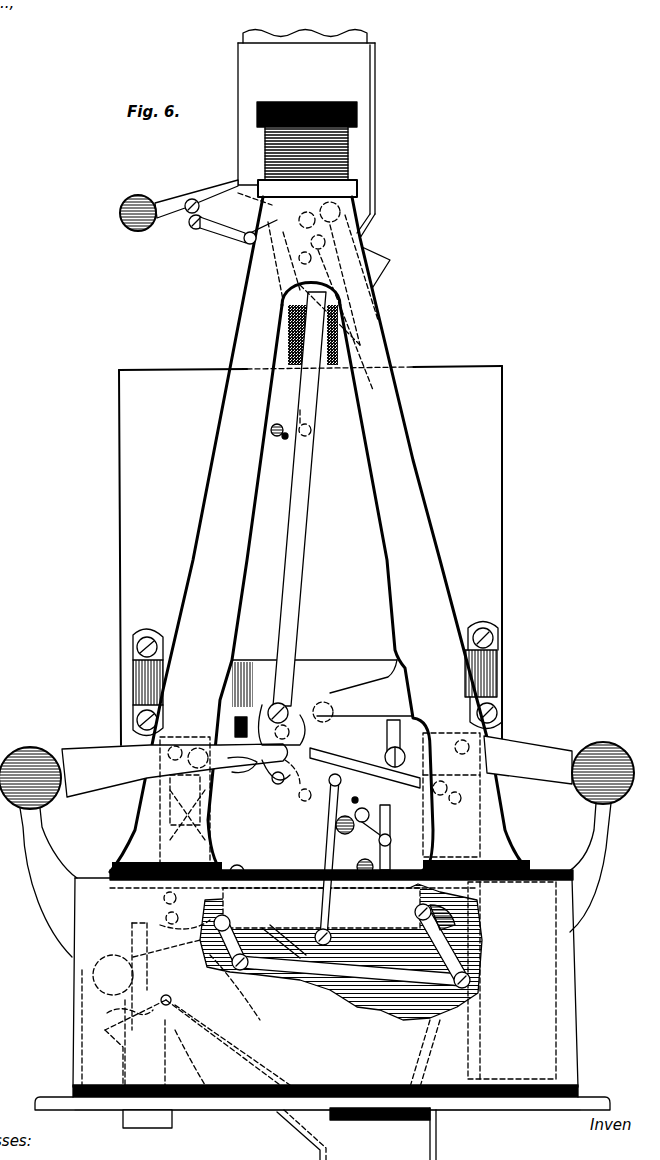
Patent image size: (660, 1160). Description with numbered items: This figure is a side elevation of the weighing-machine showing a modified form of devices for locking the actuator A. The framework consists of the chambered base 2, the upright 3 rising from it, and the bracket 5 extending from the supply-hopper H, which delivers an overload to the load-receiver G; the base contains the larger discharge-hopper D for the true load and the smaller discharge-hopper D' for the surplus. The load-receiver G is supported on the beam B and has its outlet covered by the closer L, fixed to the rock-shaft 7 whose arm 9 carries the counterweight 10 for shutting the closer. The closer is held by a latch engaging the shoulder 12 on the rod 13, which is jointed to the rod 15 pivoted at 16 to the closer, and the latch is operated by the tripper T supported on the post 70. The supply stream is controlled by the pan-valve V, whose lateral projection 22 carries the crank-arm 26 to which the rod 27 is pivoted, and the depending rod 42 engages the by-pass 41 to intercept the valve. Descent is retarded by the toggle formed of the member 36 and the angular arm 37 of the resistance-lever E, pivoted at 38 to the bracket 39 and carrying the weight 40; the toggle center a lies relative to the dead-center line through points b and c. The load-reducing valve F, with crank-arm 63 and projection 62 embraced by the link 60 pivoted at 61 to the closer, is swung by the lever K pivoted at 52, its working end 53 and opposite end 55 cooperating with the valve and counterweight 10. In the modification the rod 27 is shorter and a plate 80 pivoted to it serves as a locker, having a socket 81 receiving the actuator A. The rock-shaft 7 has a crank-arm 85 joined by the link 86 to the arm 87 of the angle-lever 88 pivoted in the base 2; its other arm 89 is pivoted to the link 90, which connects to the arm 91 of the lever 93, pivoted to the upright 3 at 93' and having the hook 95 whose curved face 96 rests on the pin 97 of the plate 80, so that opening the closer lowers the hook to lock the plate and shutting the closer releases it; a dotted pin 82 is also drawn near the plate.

The supply-hopper H is at (306, 134).
The bracket 5 is at (334, 104).
The crank-arm or offset 26 is at (307, 162).
The upright or column 3 is at (410, 493).
The pan-valve V is at (378, 260).
The rod 27 is at (293, 575).
The by-pass 41 is at (280, 424).
The rod 42 is at (367, 347).
The load-receiver G is at (310, 555).
The counterweighted resistance device or lever E is at (194, 199).
The weight 40 is at (132, 226).
The bracket 39 is at (212, 196).
The pivot 38 is at (190, 200).
The angular arm 37 is at (190, 226).
The extreme point of toggle b is at (188, 249).
The toggle member 36 is at (277, 220).
The point or center of toggle a is at (244, 249).
The lateral projection 22 is at (308, 291).
The extreme point of toggle c is at (314, 233).
The actuator A is at (144, 850).
The supporting-beam B is at (239, 779).
The arm 91 is at (492, 770).
The plate 80 is at (290, 722).
The pin 82 is at (330, 705).
The hook 95 is at (320, 768).
The shoulder 12 is at (350, 775).
The rod 13 is at (395, 780).
The socket 81 is at (274, 782).
The curved face 96 is at (302, 788).
The pin 97 is at (276, 785).
The closer L is at (366, 812).
The tripper T is at (393, 837).
The link 90 is at (380, 842).
The post 70 is at (378, 866).
The rod 15 is at (328, 852).
The pivot 93' is at (451, 786).
The lever 93 is at (444, 773).
The link 60 is at (180, 862).
The projection 62 is at (175, 866).
The pivot 61 is at (238, 865).
The crank-arm 63 is at (164, 912).
The chambered base 2 is at (322, 990).
The counterweight 10 is at (93, 975).
The load-reducing valve F is at (166, 976).
The arm 9 is at (143, 988).
The actuator or lever K is at (197, 1040).
The pivot 52 is at (164, 1006).
The opposite end of lever 55 is at (105, 1013).
The working end of lever 53 is at (210, 965).
The crank-arm 85 is at (222, 972).
The link 86 is at (360, 978).
The rock-shaft 7 is at (228, 921).
The pivot 16 is at (327, 931).
The arm 87 is at (465, 952).
The angle-lever 88 is at (462, 915).
The arm 89 is at (430, 905).
The discharge-hopper D' is at (147, 1131).
The discharge-hopper D is at (356, 1134).